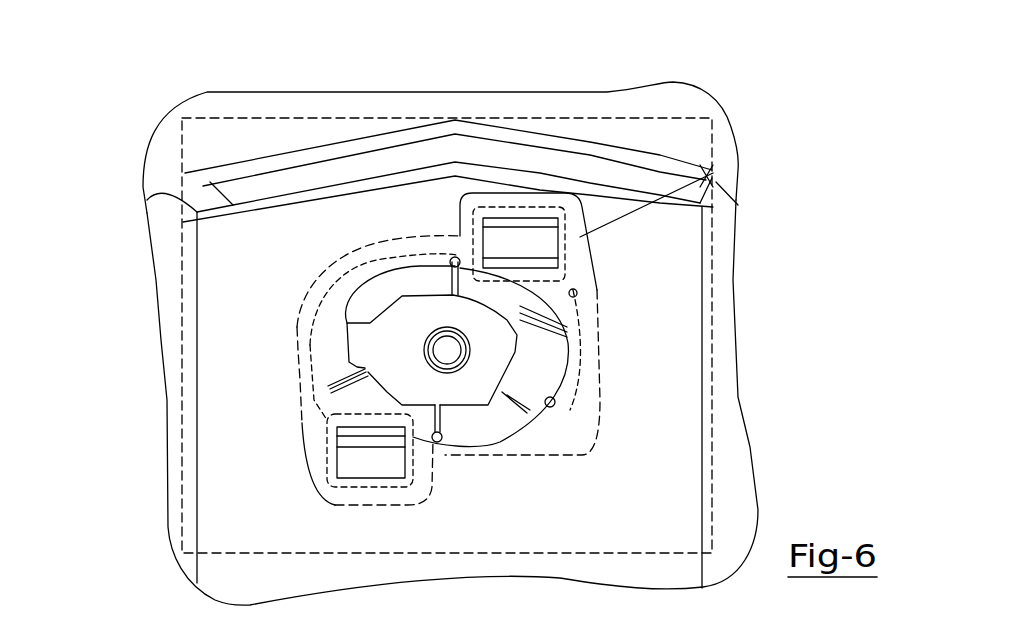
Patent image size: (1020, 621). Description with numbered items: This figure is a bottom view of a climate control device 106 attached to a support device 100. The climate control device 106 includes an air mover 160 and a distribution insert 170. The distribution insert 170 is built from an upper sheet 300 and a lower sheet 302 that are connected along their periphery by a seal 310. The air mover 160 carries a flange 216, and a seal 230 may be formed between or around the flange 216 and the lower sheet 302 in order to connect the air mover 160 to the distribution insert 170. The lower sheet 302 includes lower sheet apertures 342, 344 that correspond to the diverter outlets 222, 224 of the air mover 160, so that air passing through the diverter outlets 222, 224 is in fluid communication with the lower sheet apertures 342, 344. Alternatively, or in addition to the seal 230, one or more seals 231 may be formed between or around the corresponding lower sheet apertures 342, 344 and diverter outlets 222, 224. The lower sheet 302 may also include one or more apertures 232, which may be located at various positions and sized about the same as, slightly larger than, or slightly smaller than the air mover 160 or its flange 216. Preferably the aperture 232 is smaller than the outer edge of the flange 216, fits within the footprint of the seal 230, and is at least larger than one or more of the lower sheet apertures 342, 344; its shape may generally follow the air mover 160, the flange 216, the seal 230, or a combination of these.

The support device 100 is at (735, 278).
The climate control device 106 is at (200, 152).
The air mover 160 is at (510, 418).
The distribution insert 170 is at (737, 497).
The flange 216 is at (583, 240).
The diverter outlet 222 is at (713, 177).
The diverter outlet 224 is at (347, 468).
The seal 230 is at (318, 308).
The seal 231 is at (585, 347).
The aperture 232 is at (317, 353).
The upper sheet 300 is at (403, 158).
The lower sheet 302 is at (300, 175).
The seal 310 is at (163, 392).
The lower sheet aperture 342 is at (522, 243).
The lower sheet aperture 344 is at (367, 455).